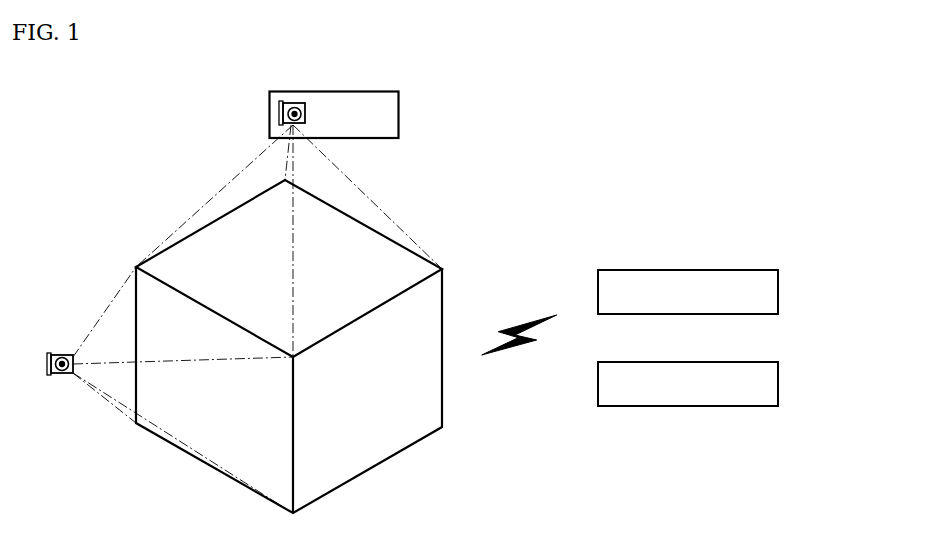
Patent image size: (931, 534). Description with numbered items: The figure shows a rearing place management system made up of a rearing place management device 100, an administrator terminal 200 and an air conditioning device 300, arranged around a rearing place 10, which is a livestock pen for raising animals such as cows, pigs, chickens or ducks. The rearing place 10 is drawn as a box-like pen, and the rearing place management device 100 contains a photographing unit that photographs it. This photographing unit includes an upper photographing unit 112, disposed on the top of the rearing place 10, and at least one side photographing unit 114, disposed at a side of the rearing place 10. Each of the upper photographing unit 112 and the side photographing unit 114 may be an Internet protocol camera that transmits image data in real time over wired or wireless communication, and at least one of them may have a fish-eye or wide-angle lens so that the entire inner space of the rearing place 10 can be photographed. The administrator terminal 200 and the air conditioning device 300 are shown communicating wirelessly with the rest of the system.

The rearing place 10 is at (348, 453).
The rearing place management device 100 is at (398, 113).
The upper photographing unit 112 is at (305, 109).
The side photographing unit 114 is at (53, 355).
The administrator terminal 200 is at (778, 292).
The air conditioning device 300 is at (778, 385).